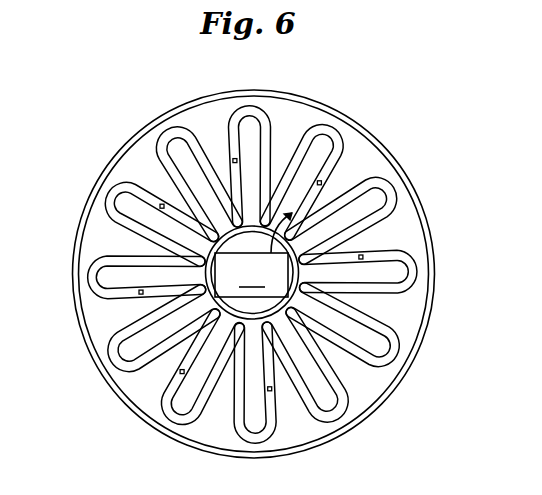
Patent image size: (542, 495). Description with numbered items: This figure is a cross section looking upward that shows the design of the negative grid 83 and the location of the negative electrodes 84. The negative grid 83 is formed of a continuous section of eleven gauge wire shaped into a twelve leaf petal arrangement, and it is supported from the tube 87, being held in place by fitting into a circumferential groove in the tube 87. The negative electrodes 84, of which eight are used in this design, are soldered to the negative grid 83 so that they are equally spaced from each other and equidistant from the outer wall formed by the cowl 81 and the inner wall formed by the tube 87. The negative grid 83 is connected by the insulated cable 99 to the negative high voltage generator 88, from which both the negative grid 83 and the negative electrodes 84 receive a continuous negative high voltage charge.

The cowl 81 is at (420, 342).
The negative grid 83 is at (395, 205).
The negative electrodes 84 is at (320, 183).
The tube 87 is at (132, 321).
The negative high voltage generator 88 is at (251, 275).
The insulated cable 99 is at (284, 220).